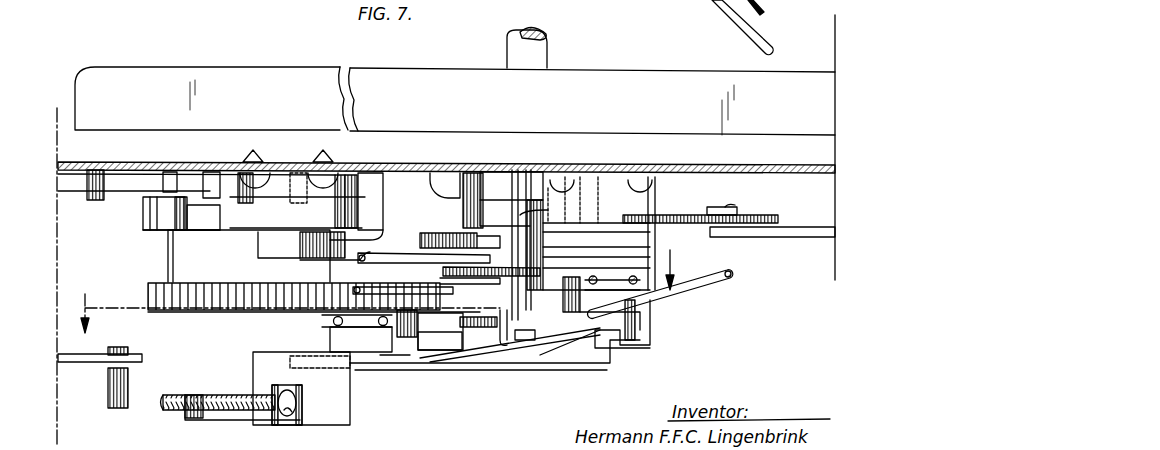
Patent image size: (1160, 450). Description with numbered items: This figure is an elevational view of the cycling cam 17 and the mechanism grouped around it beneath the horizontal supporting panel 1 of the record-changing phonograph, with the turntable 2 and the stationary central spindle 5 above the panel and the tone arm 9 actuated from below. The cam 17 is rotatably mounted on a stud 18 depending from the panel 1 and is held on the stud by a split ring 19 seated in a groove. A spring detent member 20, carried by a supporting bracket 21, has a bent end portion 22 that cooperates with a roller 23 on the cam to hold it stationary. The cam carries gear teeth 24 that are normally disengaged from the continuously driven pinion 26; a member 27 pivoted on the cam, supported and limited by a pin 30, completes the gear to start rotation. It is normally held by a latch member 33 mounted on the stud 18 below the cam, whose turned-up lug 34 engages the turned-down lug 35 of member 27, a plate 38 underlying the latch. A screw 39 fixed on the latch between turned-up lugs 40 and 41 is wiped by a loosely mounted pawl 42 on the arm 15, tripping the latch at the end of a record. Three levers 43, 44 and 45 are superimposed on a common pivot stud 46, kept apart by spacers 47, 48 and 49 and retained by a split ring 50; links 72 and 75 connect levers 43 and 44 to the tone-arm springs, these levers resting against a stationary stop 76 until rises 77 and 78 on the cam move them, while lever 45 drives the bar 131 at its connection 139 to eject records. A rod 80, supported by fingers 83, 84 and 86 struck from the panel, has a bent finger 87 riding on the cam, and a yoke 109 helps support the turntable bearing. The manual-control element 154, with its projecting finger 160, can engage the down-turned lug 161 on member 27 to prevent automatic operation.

The supporting panel 1 is at (828, 170).
The turntable 2 is at (146, 72).
The central spindle 5 is at (549, 43).
The tone arm 9 is at (373, 281).
The arm 15 is at (74, 362).
The cycling cam 17 is at (172, 246).
The stud 18 is at (384, 187).
The split ring 19 is at (327, 322).
The spring detent member 20 is at (143, 222).
The supporting bracket 21 is at (312, 227).
The bent end portion 22 is at (143, 207).
The roller 23 is at (210, 219).
The gear teeth 24 is at (150, 290).
The driving pinion 26 is at (565, 353).
The member 27 is at (480, 328).
The pin 30 is at (523, 325).
The latch member 33 is at (253, 352).
The turned-up lug 34 is at (455, 340).
The turned-down lug 35 is at (408, 337).
The plate 38 is at (503, 371).
The screw 39 is at (232, 395).
The turned-up lug 40 is at (185, 414).
The turned-up lug 41 is at (302, 388).
The pawl 42 is at (118, 408).
The lever 43 is at (640, 282).
The lever 44 is at (440, 236).
The lever 45 is at (693, 212).
The common pivot stud 46 is at (630, 335).
The spacer 47 is at (594, 285).
The spacer 48 is at (587, 233).
The spacer 49 is at (640, 207).
The split ring 50 is at (624, 292).
The link 72 is at (358, 283).
The link element 75 is at (372, 258).
The stationary stop 76 is at (520, 186).
The rise 77 is at (450, 262).
The rise 78 is at (305, 252).
The rod 80 is at (70, 180).
The finger 83 is at (95, 200).
The finger 84 is at (206, 172).
The finger 86 is at (294, 178).
The downwardly bent finger 87 is at (258, 233).
The yoke 109 is at (441, 180).
The bar 131 is at (814, 238).
The connection 139 is at (740, 208).
The element 154 is at (740, 22).
The projecting finger 160 is at (395, 359).
The down-turned lug 161 is at (524, 342).